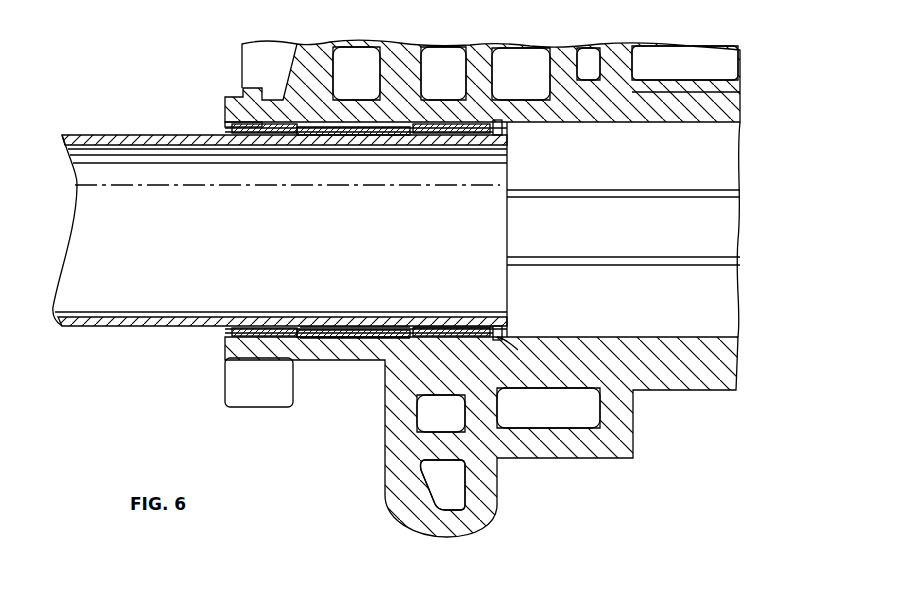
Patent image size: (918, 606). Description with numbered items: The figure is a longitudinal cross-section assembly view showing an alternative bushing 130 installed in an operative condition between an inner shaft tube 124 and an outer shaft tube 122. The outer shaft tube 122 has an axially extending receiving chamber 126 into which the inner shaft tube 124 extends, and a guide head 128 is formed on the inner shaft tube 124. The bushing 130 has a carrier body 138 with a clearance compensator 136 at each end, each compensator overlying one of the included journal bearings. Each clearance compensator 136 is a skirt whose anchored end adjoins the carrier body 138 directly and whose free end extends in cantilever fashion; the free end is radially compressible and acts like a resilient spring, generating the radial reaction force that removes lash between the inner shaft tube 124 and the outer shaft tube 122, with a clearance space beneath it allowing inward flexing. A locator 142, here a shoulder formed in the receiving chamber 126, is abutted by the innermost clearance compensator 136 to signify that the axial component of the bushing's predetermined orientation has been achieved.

The outer shaft tube 122 is at (667, 392).
The inner shaft tube 124 is at (510, 294).
The receiving chamber 126 is at (336, 345).
The guide head 128 is at (510, 325).
The bushing 130 is at (313, 347).
The clearance compensators 136 is at (447, 340).
The carrier body 138 is at (363, 343).
The locator 142 is at (494, 336).